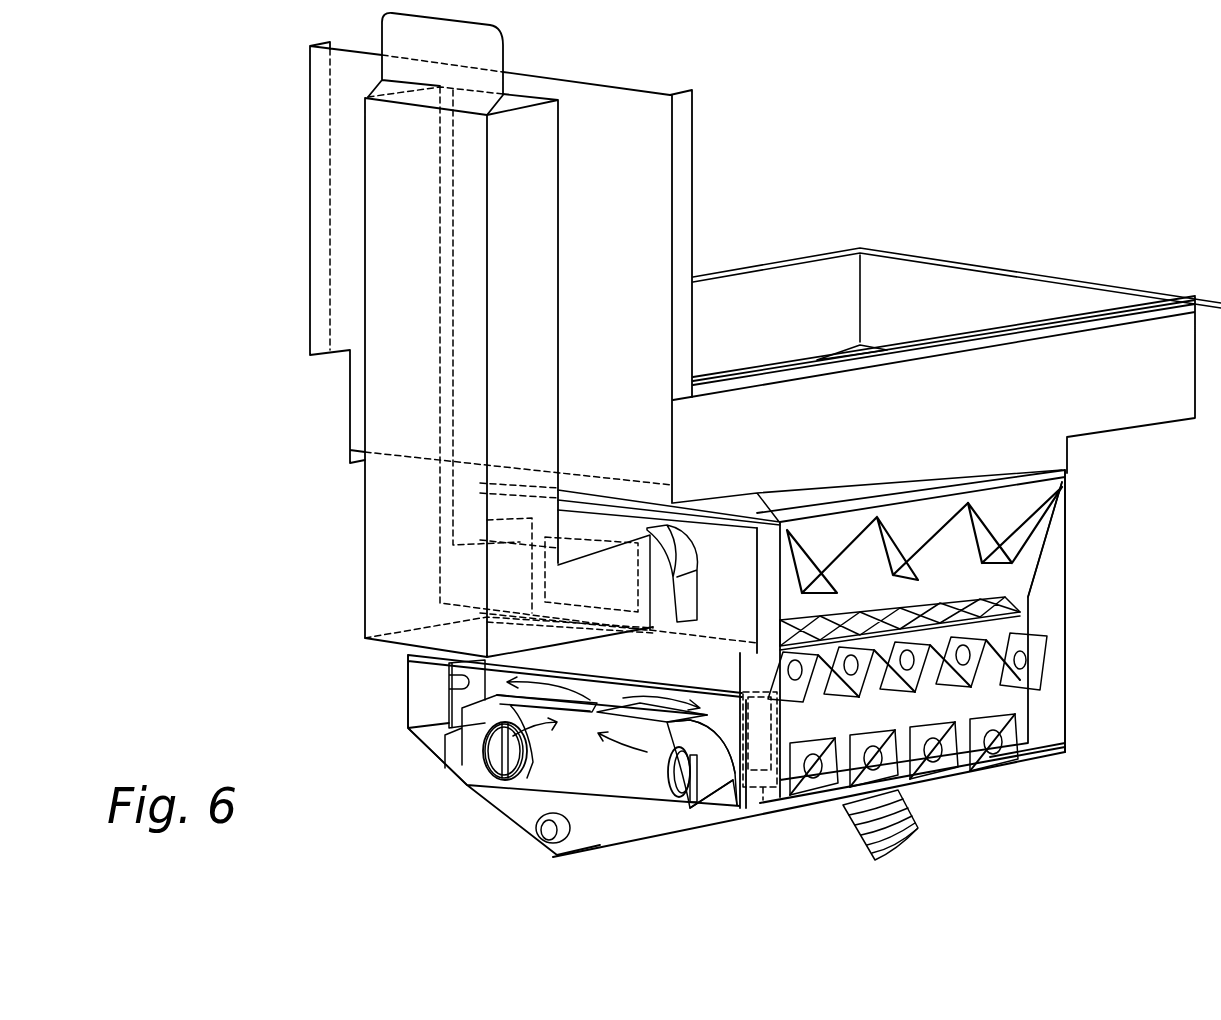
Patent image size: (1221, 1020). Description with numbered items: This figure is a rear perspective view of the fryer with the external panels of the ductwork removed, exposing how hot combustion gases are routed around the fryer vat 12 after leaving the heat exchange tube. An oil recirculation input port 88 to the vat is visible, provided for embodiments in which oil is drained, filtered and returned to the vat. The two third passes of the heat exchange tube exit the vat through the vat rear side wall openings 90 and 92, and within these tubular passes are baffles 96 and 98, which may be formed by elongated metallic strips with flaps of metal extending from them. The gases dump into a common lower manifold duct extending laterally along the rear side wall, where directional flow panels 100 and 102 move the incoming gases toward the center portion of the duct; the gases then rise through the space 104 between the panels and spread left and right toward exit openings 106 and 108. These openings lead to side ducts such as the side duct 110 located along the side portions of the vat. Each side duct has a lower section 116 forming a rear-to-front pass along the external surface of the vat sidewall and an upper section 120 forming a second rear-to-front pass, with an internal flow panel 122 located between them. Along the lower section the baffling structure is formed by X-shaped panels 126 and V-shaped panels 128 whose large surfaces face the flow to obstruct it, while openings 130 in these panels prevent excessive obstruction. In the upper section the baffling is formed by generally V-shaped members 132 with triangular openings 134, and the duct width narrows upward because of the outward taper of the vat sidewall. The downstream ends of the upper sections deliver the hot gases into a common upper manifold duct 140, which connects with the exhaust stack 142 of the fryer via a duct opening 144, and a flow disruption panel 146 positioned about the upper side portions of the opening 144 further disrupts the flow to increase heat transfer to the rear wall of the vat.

The fryer vat 12 is at (880, 323).
The oil recirculation input port 88 is at (540, 835).
The vat rear side wall opening 90 is at (672, 790).
The vat rear side wall opening 92 is at (533, 763).
The baffle 96 is at (717, 775).
The baffle 98 is at (527, 785).
The directional flow panel 100 is at (723, 773).
The directional flow panel 102 is at (460, 748).
The space 104 is at (577, 717).
The exit opening 106 is at (763, 800).
The exit opening 108 is at (449, 673).
The side duct 110 is at (1042, 612).
The lower section 116 is at (1027, 760).
The upper section 120 is at (1037, 540).
The internal flow panel 122 is at (993, 590).
The X-shaped panel 126 is at (990, 740).
The V-shaped panel 128 is at (950, 760).
The opening 130 is at (907, 755).
The V-shaped member 132 is at (990, 523).
The triangular opening 134 is at (927, 553).
The upper manifold duct 140 is at (723, 577).
The exhaust stack 142 is at (383, 492).
The duct opening 144 is at (640, 578).
The flow disruption panel 146 is at (683, 558).